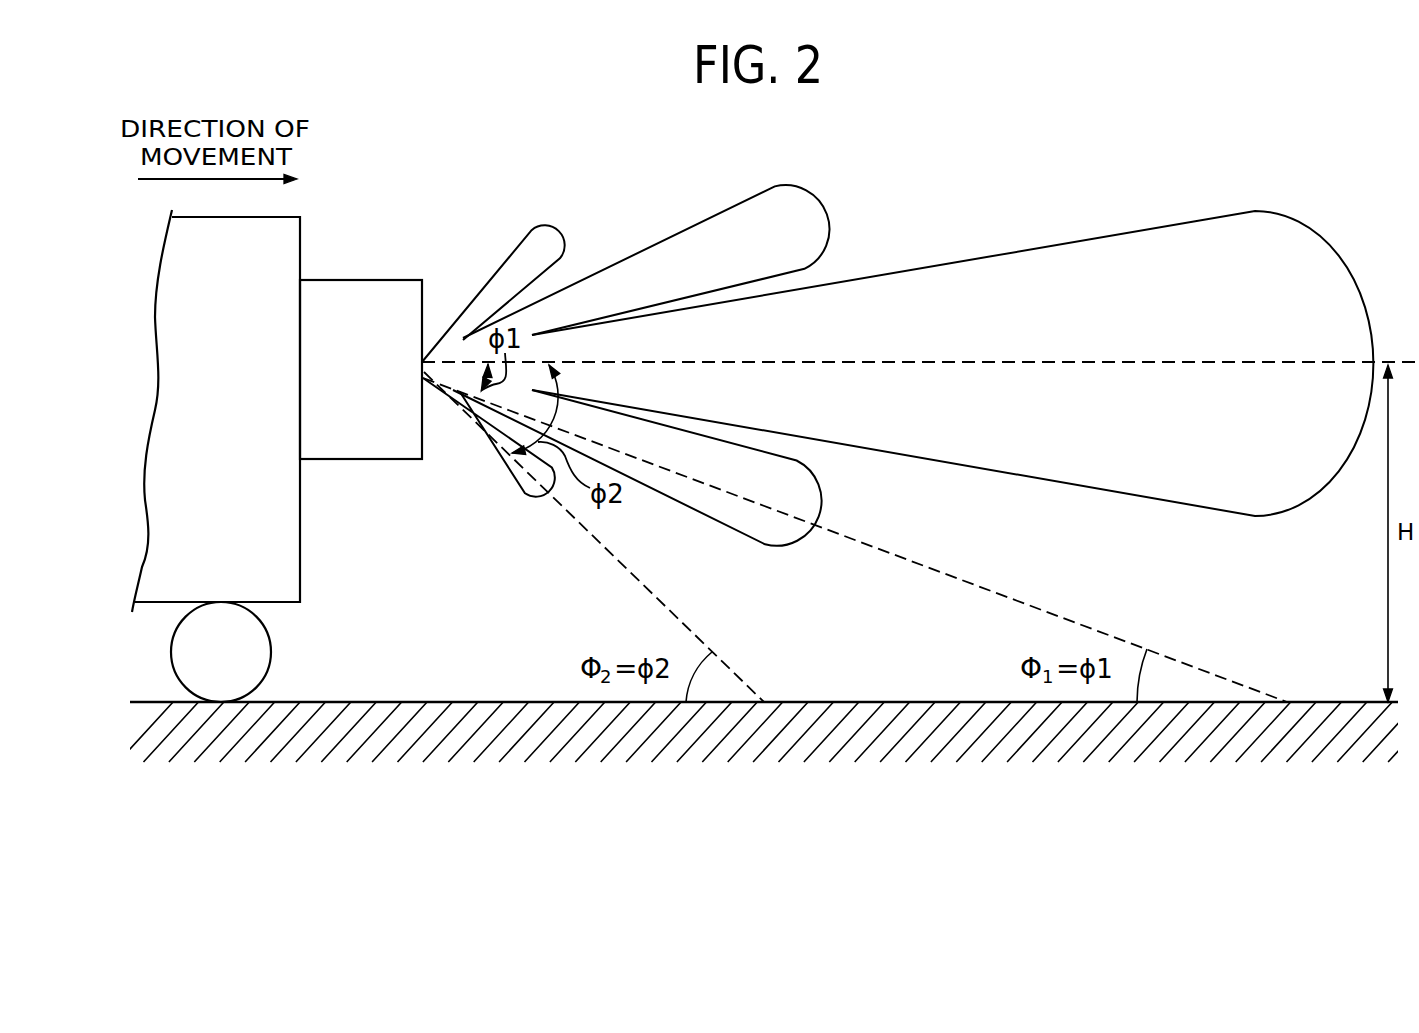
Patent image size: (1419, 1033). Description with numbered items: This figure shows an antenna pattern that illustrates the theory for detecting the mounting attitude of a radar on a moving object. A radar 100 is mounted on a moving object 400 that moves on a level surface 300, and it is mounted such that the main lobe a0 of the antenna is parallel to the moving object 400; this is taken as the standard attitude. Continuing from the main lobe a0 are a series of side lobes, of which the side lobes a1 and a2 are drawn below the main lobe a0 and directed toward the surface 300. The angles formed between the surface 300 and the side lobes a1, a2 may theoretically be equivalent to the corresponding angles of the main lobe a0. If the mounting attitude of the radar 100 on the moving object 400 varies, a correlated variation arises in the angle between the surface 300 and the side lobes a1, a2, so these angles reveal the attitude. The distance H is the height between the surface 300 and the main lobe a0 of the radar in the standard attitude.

The moving object 400 is at (283, 253).
The radar 100 is at (365, 277).
The level surface 300 is at (365, 702).
The main lobe a0 is at (1312, 363).
The side lobe a1 is at (773, 508).
The side lobe a2 is at (530, 476).